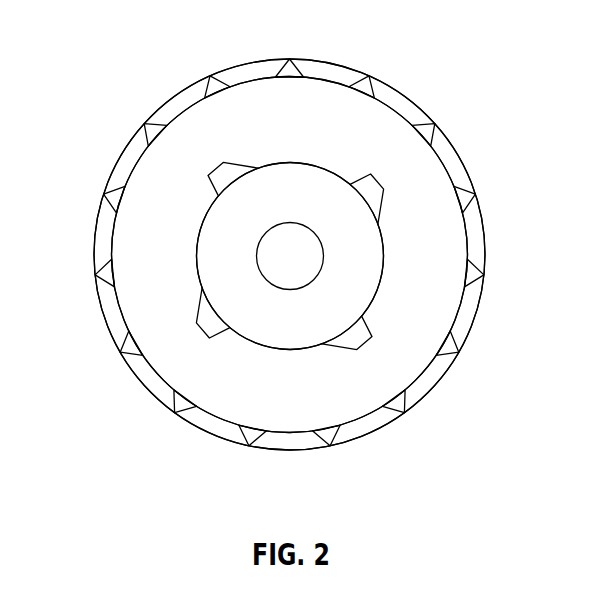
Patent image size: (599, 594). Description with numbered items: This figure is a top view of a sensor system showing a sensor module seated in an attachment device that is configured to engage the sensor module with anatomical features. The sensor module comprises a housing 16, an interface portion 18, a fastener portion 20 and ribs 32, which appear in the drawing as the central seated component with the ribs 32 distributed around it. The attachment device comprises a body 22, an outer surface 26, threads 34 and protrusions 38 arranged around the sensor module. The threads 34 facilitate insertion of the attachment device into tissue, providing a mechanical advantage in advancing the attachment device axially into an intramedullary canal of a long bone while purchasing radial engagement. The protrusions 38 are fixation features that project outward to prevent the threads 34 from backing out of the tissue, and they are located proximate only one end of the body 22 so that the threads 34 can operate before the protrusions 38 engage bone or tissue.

The housing 16 is at (292, 187).
The interface portion 18 is at (373, 265).
The fastener portion 20 is at (281, 290).
The body 22 is at (422, 358).
The outer surface 26 is at (153, 382).
The ribs 32 is at (222, 175).
The threads 34 is at (112, 322).
The protrusions 38 is at (98, 277).